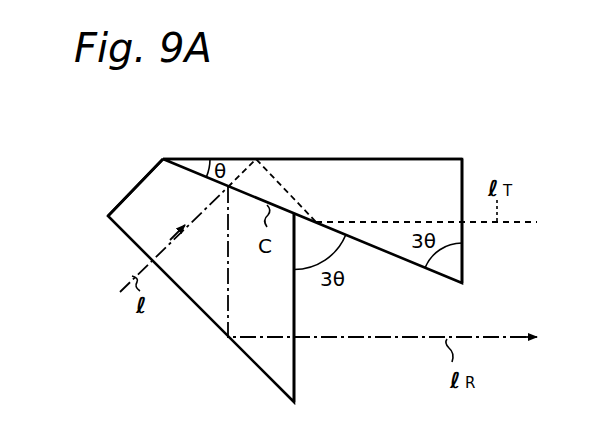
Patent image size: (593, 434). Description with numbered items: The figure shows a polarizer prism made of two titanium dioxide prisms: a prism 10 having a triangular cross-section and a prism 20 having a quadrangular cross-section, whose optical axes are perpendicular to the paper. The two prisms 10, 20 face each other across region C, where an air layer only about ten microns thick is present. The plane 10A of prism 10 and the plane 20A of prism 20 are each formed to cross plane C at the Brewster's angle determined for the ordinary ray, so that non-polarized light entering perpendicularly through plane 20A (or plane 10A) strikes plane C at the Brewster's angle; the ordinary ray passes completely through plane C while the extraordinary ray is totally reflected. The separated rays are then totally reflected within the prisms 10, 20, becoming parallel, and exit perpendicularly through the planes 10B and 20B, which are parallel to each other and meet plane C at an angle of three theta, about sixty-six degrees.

The prism having a triangular cross-section 10 is at (358, 159).
The plane of the prism 10 for introducing and emitting the light 10A is at (433, 154).
The plane for totally reflecting the light 10B is at (466, 269).
The prism having a quadrangular cross-section 20 is at (198, 298).
The plane of the prism 20 for introducing and emitting the light 20A is at (121, 236).
The plane for totally reflecting the light 20B is at (299, 374).